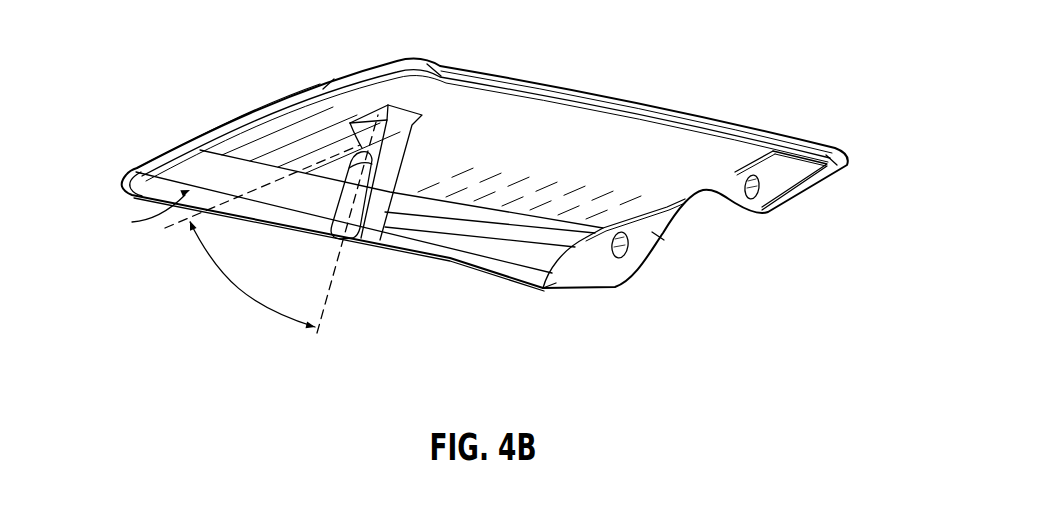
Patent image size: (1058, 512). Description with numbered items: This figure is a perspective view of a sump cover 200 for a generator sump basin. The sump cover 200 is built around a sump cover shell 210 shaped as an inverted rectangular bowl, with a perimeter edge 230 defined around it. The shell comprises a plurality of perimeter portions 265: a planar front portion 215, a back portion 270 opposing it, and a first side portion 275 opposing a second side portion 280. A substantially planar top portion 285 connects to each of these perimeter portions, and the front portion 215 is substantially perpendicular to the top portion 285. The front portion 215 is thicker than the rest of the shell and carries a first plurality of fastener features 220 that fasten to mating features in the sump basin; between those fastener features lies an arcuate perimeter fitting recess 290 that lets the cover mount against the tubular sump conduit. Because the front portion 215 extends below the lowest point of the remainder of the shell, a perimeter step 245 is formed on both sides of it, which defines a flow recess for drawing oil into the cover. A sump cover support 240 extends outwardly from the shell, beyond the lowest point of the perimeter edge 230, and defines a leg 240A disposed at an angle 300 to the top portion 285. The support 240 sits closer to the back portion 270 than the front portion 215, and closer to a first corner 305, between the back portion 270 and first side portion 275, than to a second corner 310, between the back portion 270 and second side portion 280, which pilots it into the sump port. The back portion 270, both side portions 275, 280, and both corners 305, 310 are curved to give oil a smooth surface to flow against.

The sump cover 200 is at (170, 60).
The sump cover shell 210 is at (676, 105).
The front portion 215 is at (792, 172).
The first plurality of fastener features 220 is at (755, 206).
The perimeter edge 230 is at (580, 296).
The sump cover support 240 is at (352, 238).
The leg 240A is at (398, 170).
The perimeter step 245 is at (828, 150).
The perimeter portions 265 is at (138, 215).
The back portion 270 is at (181, 147).
The first side portion 275 is at (583, 100).
The second side portion 280 is at (452, 263).
The top portion 285 is at (570, 158).
The perimeter fitting recess 290 is at (700, 192).
The angle 300 is at (238, 290).
The first corner 305 is at (373, 62).
The second corner 310 is at (121, 172).